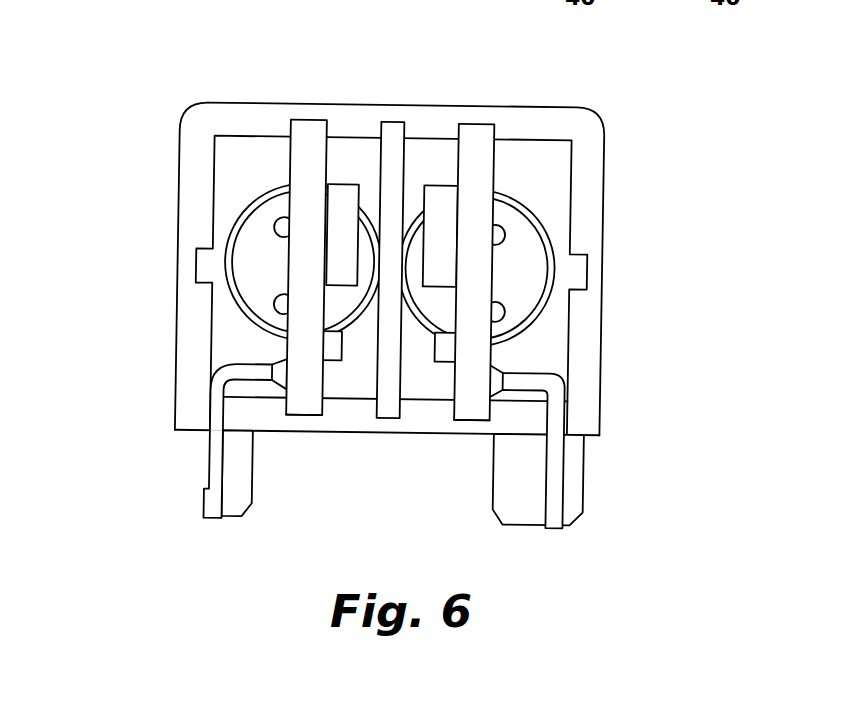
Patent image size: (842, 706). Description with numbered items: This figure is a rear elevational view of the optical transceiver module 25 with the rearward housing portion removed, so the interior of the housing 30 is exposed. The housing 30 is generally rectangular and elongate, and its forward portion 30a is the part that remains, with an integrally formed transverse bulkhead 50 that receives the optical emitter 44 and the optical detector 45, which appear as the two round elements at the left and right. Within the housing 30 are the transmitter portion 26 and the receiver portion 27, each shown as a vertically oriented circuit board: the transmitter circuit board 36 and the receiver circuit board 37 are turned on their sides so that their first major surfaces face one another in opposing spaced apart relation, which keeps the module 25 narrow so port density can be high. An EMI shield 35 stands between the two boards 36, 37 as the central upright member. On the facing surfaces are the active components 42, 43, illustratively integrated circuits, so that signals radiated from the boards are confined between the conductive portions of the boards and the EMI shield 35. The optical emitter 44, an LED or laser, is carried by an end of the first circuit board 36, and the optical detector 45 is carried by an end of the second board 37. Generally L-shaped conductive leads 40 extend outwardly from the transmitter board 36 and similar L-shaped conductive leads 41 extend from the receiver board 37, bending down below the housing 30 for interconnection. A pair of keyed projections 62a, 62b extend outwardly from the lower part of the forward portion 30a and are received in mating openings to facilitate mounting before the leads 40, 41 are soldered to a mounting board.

The optical transceiver module 25 is at (152, 62).
The transmitter portion 26 is at (300, 112).
The receiver portion 27 is at (487, 116).
The housing 30 is at (623, 256).
The forward portion 30a is at (180, 162).
The EMI shield 35 is at (387, 387).
The transmitter circuit board 36 is at (300, 393).
The receiver circuit board 37 is at (467, 400).
The conductive leads 40 is at (213, 497).
The conductive leads 41 is at (557, 480).
The active component 42 is at (343, 205).
The active component 43 is at (438, 207).
The optical emitter 44 is at (257, 270).
The optical detector 45 is at (515, 238).
The transverse bulkhead 50 is at (225, 350).
The keyed projection 62a is at (240, 497).
The keyed projection 62b is at (512, 492).